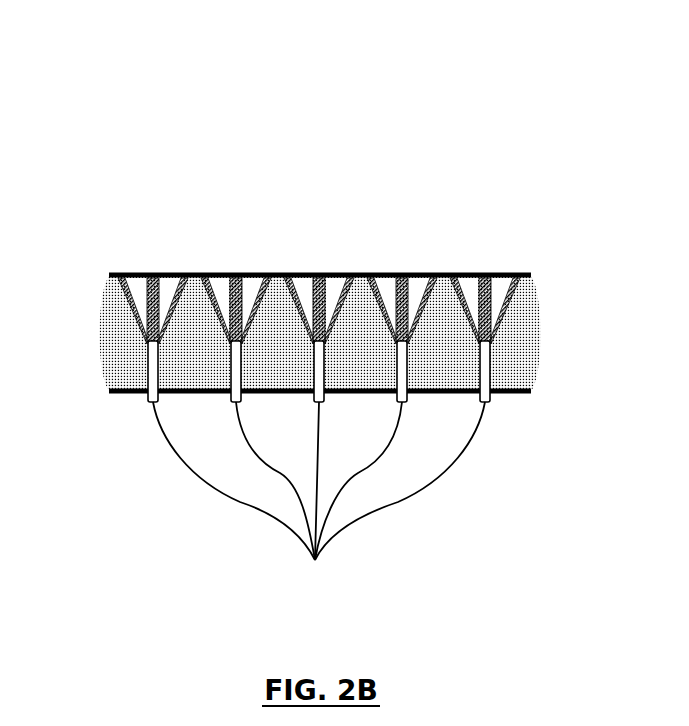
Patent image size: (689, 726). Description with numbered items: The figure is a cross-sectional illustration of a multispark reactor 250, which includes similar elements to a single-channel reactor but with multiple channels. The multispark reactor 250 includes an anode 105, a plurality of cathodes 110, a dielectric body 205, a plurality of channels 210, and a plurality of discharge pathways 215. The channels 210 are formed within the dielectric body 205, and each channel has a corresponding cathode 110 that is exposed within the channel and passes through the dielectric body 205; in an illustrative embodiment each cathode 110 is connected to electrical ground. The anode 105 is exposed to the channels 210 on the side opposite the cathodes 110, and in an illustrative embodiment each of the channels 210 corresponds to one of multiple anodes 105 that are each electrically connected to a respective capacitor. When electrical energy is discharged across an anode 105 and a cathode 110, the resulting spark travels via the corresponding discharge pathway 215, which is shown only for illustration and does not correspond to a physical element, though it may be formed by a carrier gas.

The multispark reactor 250 is at (337, 96).
The anode 105 is at (110, 275).
The dielectric body 205 is at (113, 363).
The channels 210 is at (303, 292).
The discharge pathways 215 is at (485, 290).
The cathodes 110 is at (315, 560).